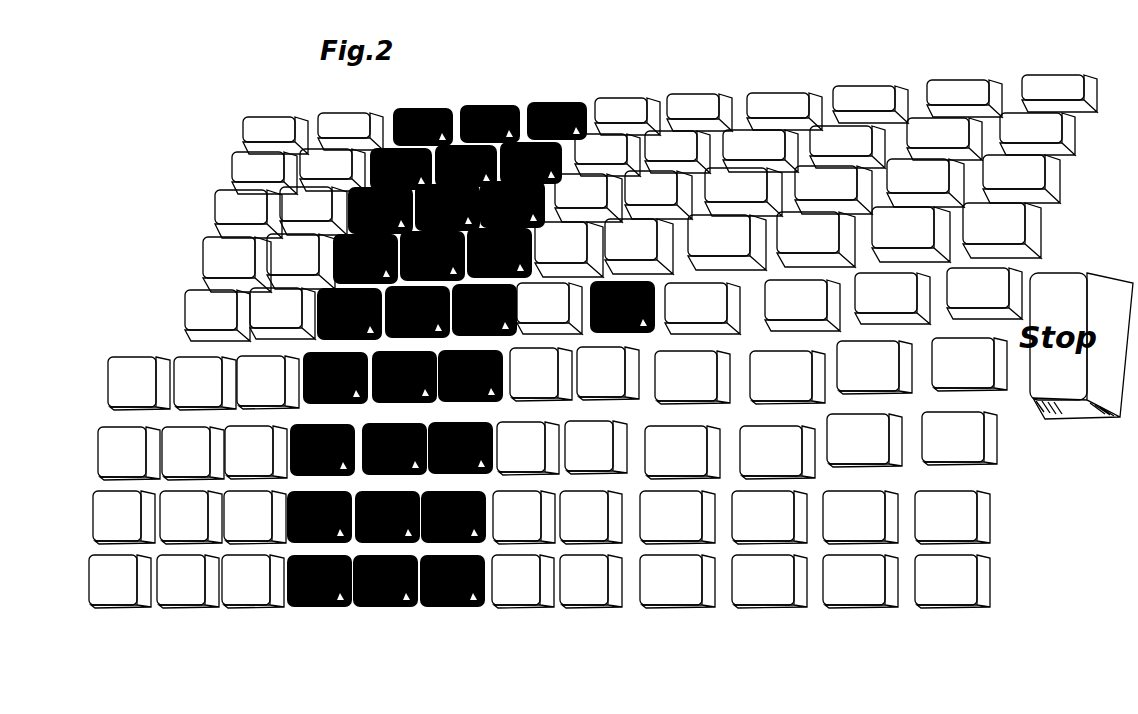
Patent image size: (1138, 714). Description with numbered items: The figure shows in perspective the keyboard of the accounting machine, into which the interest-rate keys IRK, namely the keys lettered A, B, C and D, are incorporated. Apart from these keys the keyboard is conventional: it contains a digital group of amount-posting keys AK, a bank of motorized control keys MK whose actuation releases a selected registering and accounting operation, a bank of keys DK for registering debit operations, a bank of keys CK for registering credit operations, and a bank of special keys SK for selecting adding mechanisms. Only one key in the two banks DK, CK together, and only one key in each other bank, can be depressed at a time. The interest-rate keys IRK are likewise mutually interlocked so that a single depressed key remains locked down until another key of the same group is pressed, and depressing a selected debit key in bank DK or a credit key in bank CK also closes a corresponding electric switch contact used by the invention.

The interest-rate keys IRK is at (133, 354).
The amount-posting keys AK is at (618, 616).
The motorized control keys MK is at (680, 626).
The debit keys DK is at (762, 626).
The credit keys CK is at (853, 626).
The special keys SK is at (947, 626).